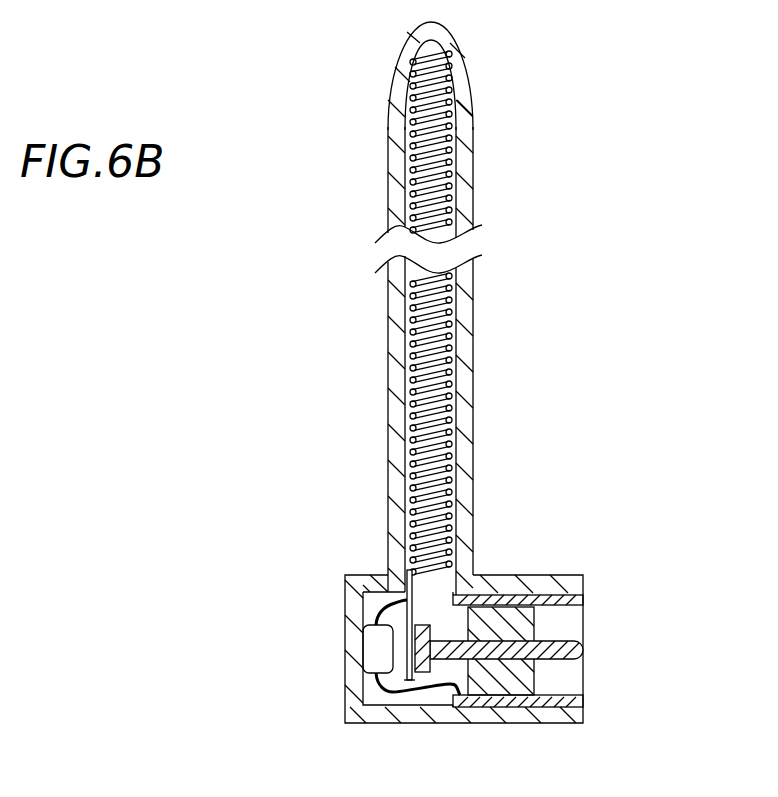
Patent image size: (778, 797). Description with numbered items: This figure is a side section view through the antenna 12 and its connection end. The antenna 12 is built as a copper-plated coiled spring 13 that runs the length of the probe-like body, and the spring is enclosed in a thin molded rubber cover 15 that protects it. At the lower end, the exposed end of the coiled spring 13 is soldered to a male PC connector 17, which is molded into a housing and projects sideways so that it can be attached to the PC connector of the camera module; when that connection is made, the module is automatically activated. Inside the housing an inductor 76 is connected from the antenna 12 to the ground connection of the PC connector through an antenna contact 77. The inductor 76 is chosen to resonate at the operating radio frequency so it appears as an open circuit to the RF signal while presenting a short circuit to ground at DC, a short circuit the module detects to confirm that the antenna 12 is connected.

The antenna 12 is at (528, 152).
The copper-plated coiled spring 13 is at (456, 333).
The molded rubber cover 15 is at (397, 192).
The male PC connector 17 is at (582, 650).
The inductor 76 is at (353, 620).
The antenna contact 77 is at (583, 700).